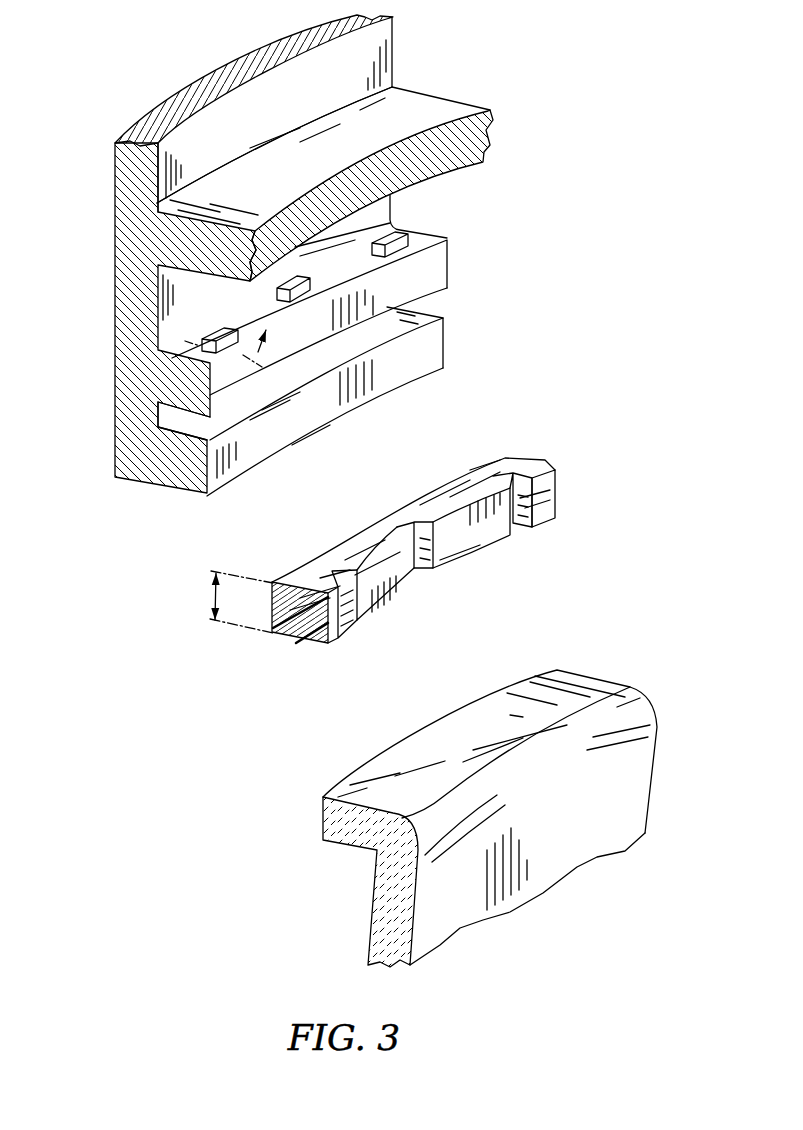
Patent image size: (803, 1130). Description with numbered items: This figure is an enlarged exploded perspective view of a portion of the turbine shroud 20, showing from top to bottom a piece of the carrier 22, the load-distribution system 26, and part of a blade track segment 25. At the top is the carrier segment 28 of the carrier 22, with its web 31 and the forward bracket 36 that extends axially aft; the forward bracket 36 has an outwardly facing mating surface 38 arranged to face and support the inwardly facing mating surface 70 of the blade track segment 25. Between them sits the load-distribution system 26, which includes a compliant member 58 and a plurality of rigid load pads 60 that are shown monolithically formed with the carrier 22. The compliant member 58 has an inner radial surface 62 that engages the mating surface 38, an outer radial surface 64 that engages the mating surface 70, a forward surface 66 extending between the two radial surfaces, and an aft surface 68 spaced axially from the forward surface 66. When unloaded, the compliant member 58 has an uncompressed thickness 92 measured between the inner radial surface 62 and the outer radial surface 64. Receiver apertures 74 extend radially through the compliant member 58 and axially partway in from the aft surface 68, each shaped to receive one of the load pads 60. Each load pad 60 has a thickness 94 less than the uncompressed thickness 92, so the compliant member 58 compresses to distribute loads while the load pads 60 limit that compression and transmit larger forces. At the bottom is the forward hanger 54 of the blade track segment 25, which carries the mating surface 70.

The turbine shroud 20 is at (603, 143).
The carrier 22 is at (114, 122).
The blade track segment 25 is at (598, 651).
The load-distribution system 26 is at (546, 360).
The carrier segment 28 is at (404, 98).
The web 31 is at (474, 98).
The forward bracket 36 is at (190, 394).
The mating surface 38 is at (268, 308).
The forward hanger 54 is at (482, 720).
The compliant member 58 is at (581, 446).
The load pads 60 is at (203, 322).
The inner radial surface 62 is at (460, 546).
The outer radial surface 64 is at (373, 523).
The forward surface 66 is at (326, 555).
The aft surface 68 is at (388, 586).
The mating surface 70 is at (347, 843).
The receiver apertures 74 is at (417, 520).
The uncompressed thickness 92 is at (213, 593).
The thickness 94 is at (251, 379).